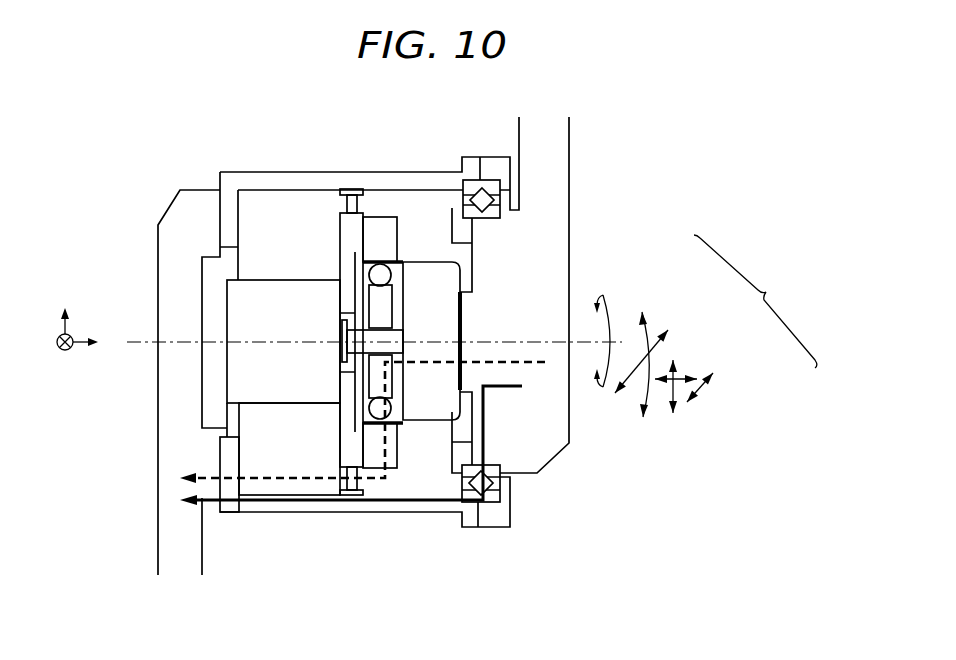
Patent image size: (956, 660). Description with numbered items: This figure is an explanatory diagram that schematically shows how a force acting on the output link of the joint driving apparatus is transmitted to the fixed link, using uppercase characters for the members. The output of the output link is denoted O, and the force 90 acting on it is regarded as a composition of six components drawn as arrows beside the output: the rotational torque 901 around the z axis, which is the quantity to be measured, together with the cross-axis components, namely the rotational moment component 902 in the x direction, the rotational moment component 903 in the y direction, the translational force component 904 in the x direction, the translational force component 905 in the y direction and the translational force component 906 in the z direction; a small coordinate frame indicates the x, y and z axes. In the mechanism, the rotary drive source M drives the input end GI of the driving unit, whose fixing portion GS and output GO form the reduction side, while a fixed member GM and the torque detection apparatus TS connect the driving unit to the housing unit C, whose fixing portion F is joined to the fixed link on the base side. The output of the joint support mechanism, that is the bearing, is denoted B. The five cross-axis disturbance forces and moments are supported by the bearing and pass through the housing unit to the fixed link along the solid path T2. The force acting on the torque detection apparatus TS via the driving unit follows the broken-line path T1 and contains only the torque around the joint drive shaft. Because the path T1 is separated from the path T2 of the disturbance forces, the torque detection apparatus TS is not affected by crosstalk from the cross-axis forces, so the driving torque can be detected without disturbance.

The fixing portion F is at (242, 511).
The rotary drive source M is at (315, 342).
The fixed member GM is at (347, 452).
The torque detection apparatus TS is at (353, 497).
The fixing portion of the driving unit GS is at (381, 227).
The input end of the driving unit GI is at (373, 301).
The output of the driving unit GO is at (428, 283).
The housing unit C is at (392, 509).
The output of the joint support mechanism B is at (490, 500).
The output of the output link O is at (570, 211).
The path of joint driving torque T1 is at (503, 357).
The path of cross-axis disturbance forces T2 is at (422, 495).
The force acting on the link 90 is at (755, 301).
The rotational torque 901 is at (609, 302).
The rotational moment component (x direction) 902 is at (665, 345).
The rotational moment component (y direction) 903 is at (648, 327).
The translational force component (x direction) 904 is at (677, 364).
The translational force component (y direction) 905 is at (712, 385).
The translational force component (z direction) 906 is at (680, 387).
The x axis x is at (64, 311).
The y axis y is at (57, 347).
The z axis z is at (92, 343).